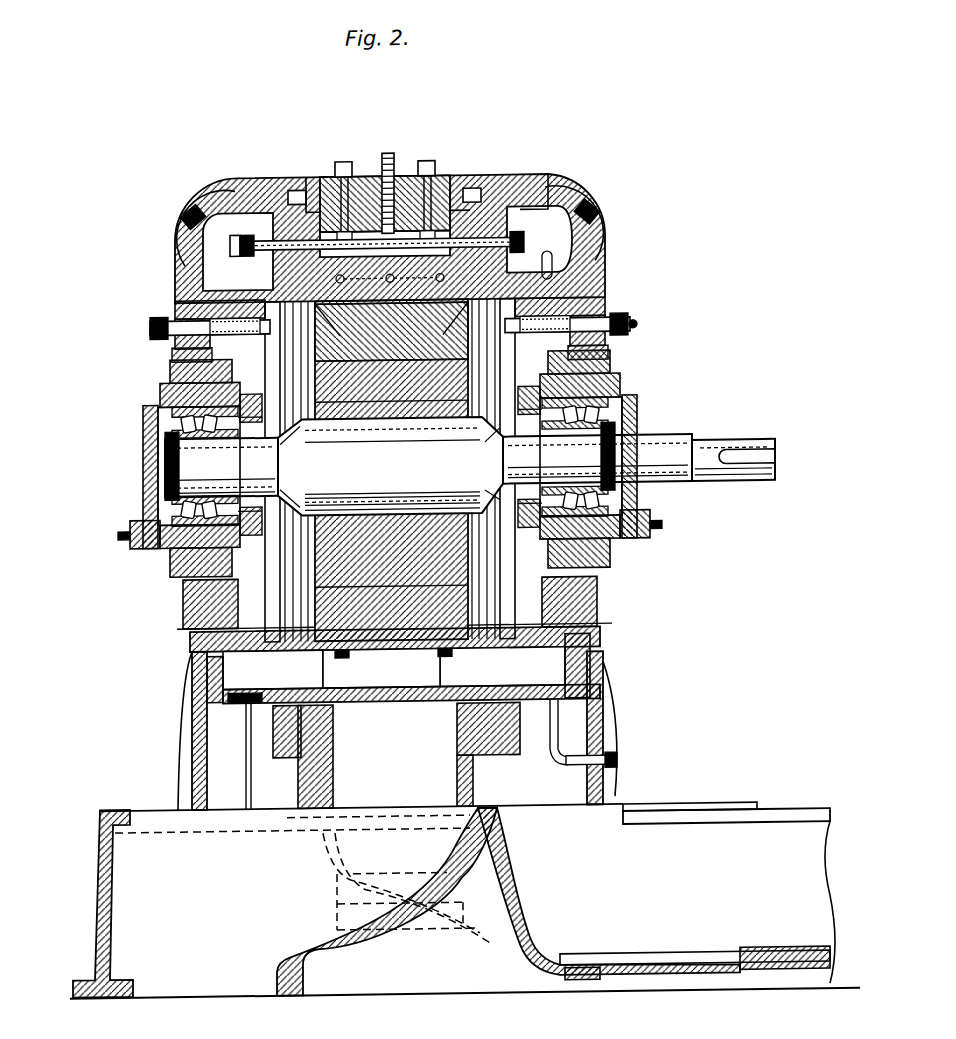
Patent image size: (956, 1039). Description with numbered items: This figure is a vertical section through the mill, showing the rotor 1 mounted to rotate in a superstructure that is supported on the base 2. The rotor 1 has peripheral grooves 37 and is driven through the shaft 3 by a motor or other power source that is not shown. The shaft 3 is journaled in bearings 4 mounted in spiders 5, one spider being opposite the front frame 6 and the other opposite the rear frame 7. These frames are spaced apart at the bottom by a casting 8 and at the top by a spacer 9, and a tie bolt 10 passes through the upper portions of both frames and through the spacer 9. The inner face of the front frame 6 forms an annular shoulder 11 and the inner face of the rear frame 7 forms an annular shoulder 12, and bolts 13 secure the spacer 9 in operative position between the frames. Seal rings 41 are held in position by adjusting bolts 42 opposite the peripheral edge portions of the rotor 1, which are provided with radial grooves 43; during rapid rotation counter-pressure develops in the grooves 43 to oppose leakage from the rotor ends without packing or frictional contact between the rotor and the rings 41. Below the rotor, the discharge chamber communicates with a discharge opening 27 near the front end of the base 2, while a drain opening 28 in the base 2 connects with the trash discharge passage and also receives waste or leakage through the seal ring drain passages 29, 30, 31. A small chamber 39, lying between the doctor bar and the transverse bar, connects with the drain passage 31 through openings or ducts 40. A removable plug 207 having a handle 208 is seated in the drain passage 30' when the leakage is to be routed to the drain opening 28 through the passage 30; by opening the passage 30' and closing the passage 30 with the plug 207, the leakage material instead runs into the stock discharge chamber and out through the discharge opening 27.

The rotor 1 is at (335, 387).
The base 2 is at (770, 810).
The shaft 3 is at (470, 465).
The bearings 4 is at (200, 431).
The spiders 5 is at (180, 344).
The front frame 6 is at (280, 190).
The rear frame 7 is at (515, 178).
The casting 8 is at (320, 738).
The spacer 9 is at (362, 183).
The tie bolt 10 is at (245, 246).
The annular shoulder 11 is at (313, 190).
The annular shoulder 12 is at (462, 193).
The bolts 13 is at (296, 188).
The discharge opening 27 is at (275, 989).
The drain opening 28 is at (598, 981).
The seal ring drain passage 29 is at (270, 634).
The drain passage 30 is at (515, 666).
The drain passage 30' is at (265, 676).
The drain passage 31 is at (392, 699).
The peripheral grooves 37 is at (388, 319).
The small chamber 39 is at (372, 638).
The openings or ducts 40 is at (342, 656).
The seal rings 41 is at (485, 359).
The adjusting bolts 42 is at (622, 319).
The radial grooves 43 is at (462, 309).
The removable plug 207 is at (244, 698).
The handle 208 is at (246, 738).